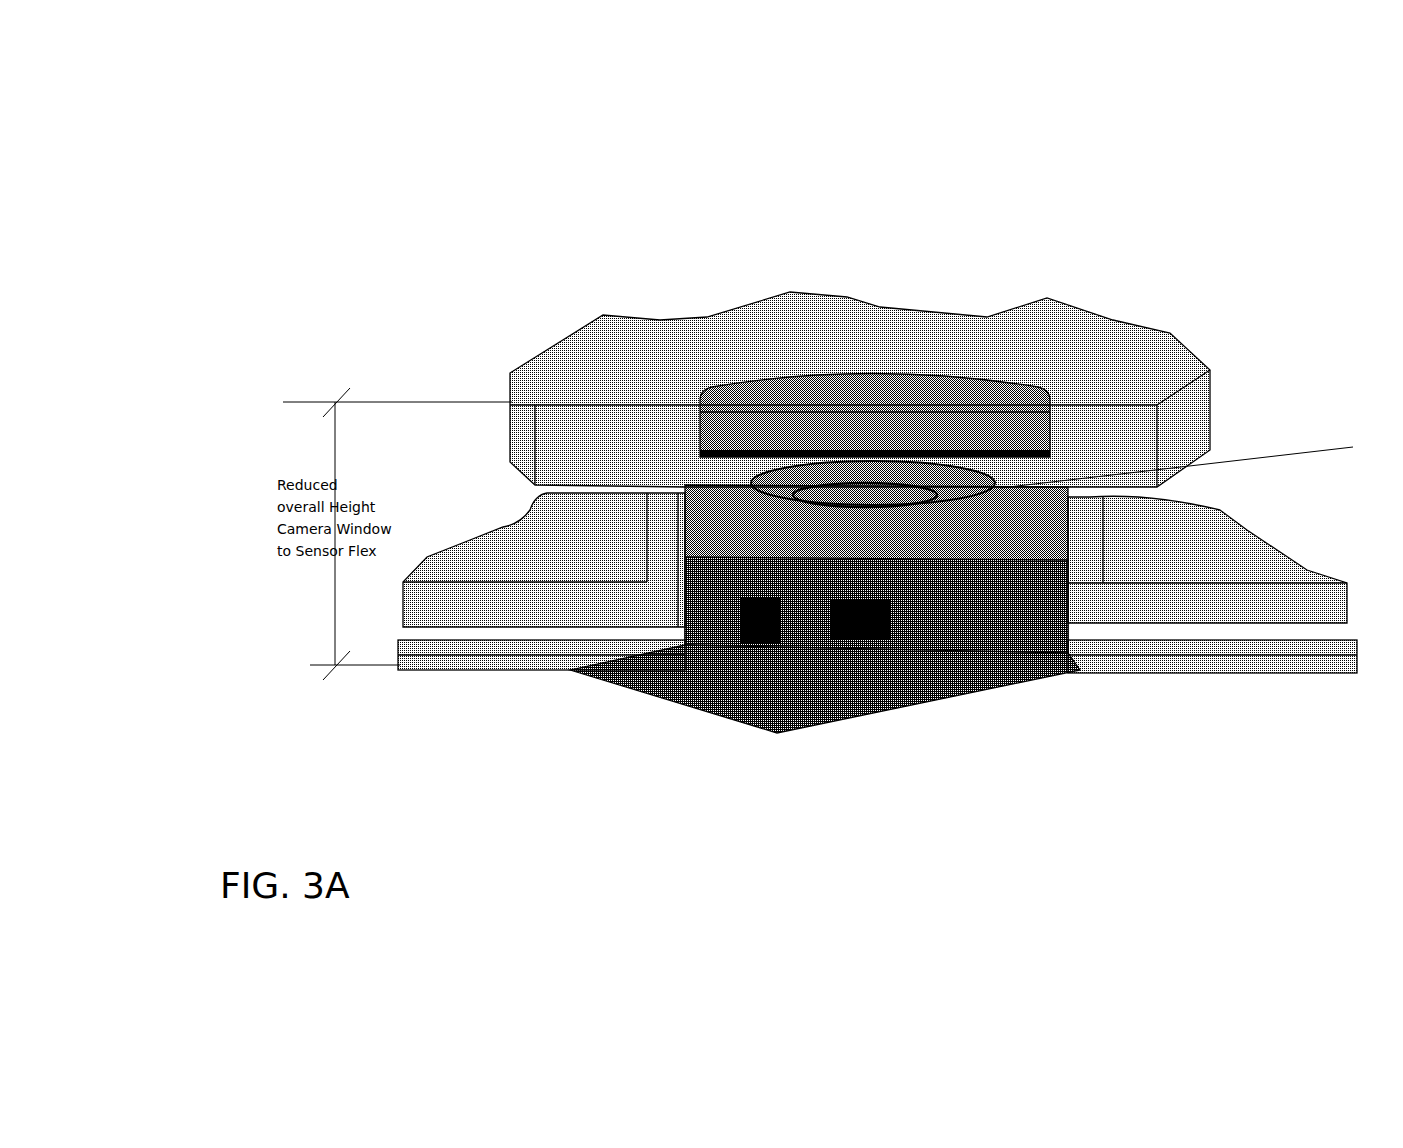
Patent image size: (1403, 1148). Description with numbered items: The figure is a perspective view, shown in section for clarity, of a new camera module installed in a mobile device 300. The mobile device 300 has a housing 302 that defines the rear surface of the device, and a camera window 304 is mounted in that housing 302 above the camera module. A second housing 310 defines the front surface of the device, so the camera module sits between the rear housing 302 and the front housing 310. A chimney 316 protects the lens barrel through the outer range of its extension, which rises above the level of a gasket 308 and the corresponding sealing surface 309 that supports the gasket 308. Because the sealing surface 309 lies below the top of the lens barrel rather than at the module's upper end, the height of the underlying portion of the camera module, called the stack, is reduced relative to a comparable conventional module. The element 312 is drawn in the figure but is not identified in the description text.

The camera module assembly 300 is at (1320, 163).
The housing cover 302 is at (1077, 307).
The camera window 304 is at (828, 377).
The lower housing frame 308 is at (1065, 492).
The camera module 309 is at (732, 520).
The sensor flex 310 is at (1177, 670).
The bracket 312 is at (965, 688).
The reference plane 316 is at (1005, 482).